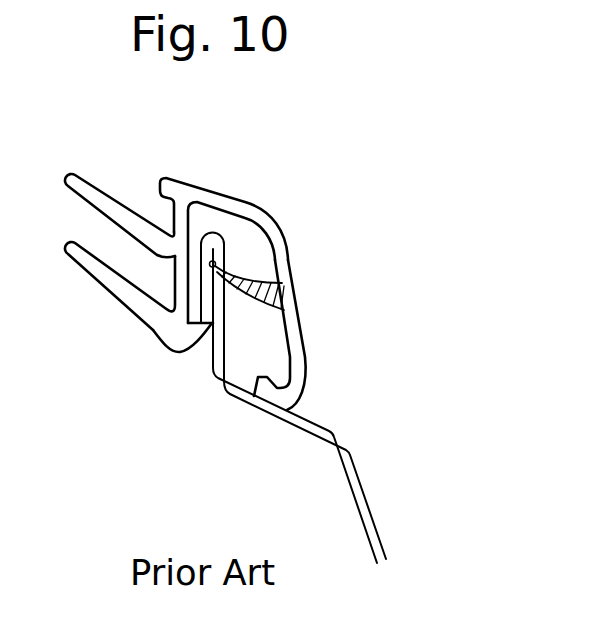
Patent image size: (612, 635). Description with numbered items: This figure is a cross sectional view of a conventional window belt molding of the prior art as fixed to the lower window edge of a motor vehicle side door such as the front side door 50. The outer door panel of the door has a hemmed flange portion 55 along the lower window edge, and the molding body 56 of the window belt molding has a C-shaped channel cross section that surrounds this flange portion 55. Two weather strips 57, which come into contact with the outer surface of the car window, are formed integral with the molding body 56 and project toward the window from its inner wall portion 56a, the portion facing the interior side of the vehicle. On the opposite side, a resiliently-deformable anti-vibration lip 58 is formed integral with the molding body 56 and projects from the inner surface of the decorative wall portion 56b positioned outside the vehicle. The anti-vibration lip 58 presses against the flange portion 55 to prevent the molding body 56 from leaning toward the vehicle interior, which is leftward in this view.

The front side door 50 is at (358, 470).
The flange portion 55 is at (224, 314).
The molding body 56 is at (219, 187).
The inner wall portion 56a is at (177, 287).
The decorative wall portion 56b is at (288, 255).
The weather strips 57 is at (106, 204).
The anti-vibration lip 58 is at (216, 262).